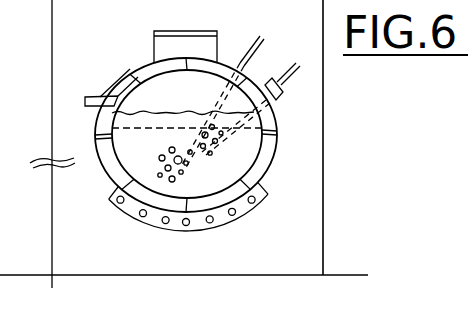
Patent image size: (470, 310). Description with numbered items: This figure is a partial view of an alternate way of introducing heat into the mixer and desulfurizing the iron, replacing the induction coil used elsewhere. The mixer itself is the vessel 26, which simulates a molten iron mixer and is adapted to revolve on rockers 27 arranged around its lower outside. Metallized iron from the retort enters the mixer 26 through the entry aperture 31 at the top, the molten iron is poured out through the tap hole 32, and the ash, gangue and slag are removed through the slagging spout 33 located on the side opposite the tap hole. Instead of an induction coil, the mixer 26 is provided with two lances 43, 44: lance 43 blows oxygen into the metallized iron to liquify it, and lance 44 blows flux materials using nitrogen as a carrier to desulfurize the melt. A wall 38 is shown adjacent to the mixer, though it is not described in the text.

The vessel 26 is at (312, 158).
The rockers 27 is at (245, 213).
The entry aperture 31 is at (180, 32).
The tap hole 32 is at (276, 95).
The slagging spout 33 is at (93, 91).
The housing wall 38 is at (323, 178).
The lance 43 is at (270, 72).
The lance 44 is at (234, 42).